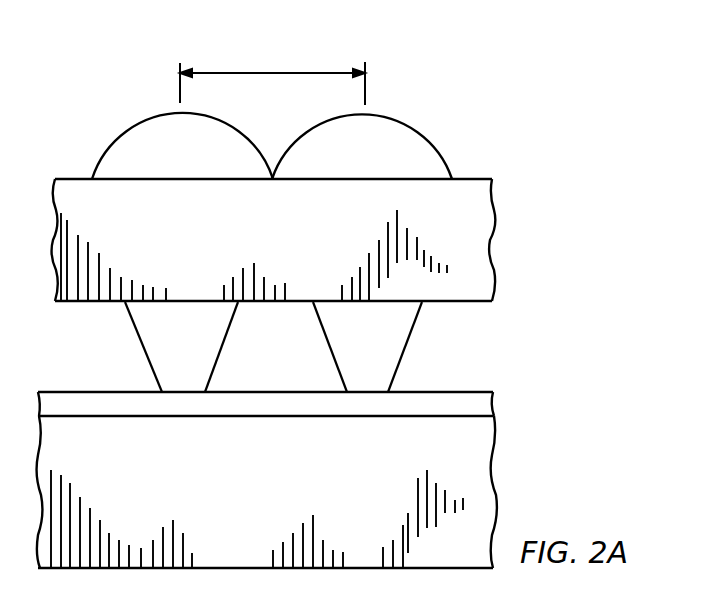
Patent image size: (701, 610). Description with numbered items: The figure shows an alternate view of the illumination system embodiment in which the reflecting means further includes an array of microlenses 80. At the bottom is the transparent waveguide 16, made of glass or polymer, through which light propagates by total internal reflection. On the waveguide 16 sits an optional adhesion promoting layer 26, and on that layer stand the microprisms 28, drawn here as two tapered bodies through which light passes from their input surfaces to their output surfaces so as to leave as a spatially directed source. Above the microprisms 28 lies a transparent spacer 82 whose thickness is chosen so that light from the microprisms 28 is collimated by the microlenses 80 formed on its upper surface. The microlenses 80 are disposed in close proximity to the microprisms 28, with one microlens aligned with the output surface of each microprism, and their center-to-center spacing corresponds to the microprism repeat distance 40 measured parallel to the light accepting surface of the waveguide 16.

The repeat distance 40 is at (280, 72).
The microlenses 80 is at (434, 138).
The spacer 82 is at (492, 212).
The microprisms 28 is at (404, 346).
The adhesion promoting layer 26 is at (495, 403).
The waveguide 16 is at (493, 463).